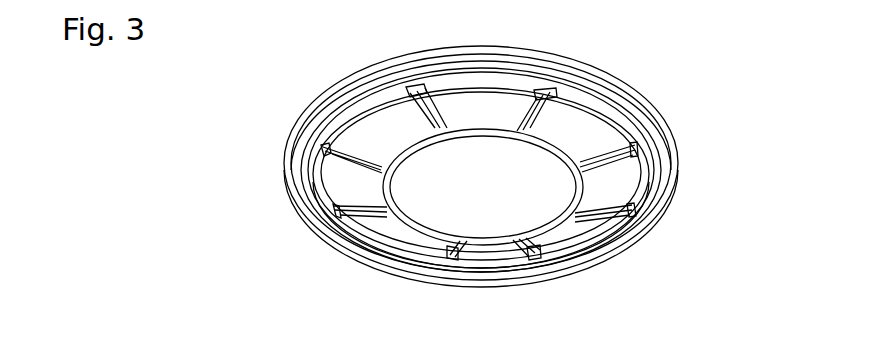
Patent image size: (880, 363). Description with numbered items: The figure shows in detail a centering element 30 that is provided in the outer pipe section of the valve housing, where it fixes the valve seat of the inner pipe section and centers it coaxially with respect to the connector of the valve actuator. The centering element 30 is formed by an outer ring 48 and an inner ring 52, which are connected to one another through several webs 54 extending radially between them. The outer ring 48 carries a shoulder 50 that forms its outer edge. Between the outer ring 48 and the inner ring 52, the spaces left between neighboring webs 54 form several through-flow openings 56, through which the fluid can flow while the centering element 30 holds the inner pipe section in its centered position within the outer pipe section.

The centering element 30 is at (664, 55).
The outer ring 48 is at (602, 115).
The shoulder 50 is at (672, 138).
The inner ring 52 is at (470, 249).
The webs 54 is at (544, 96).
The through-flow openings 56 is at (483, 98).